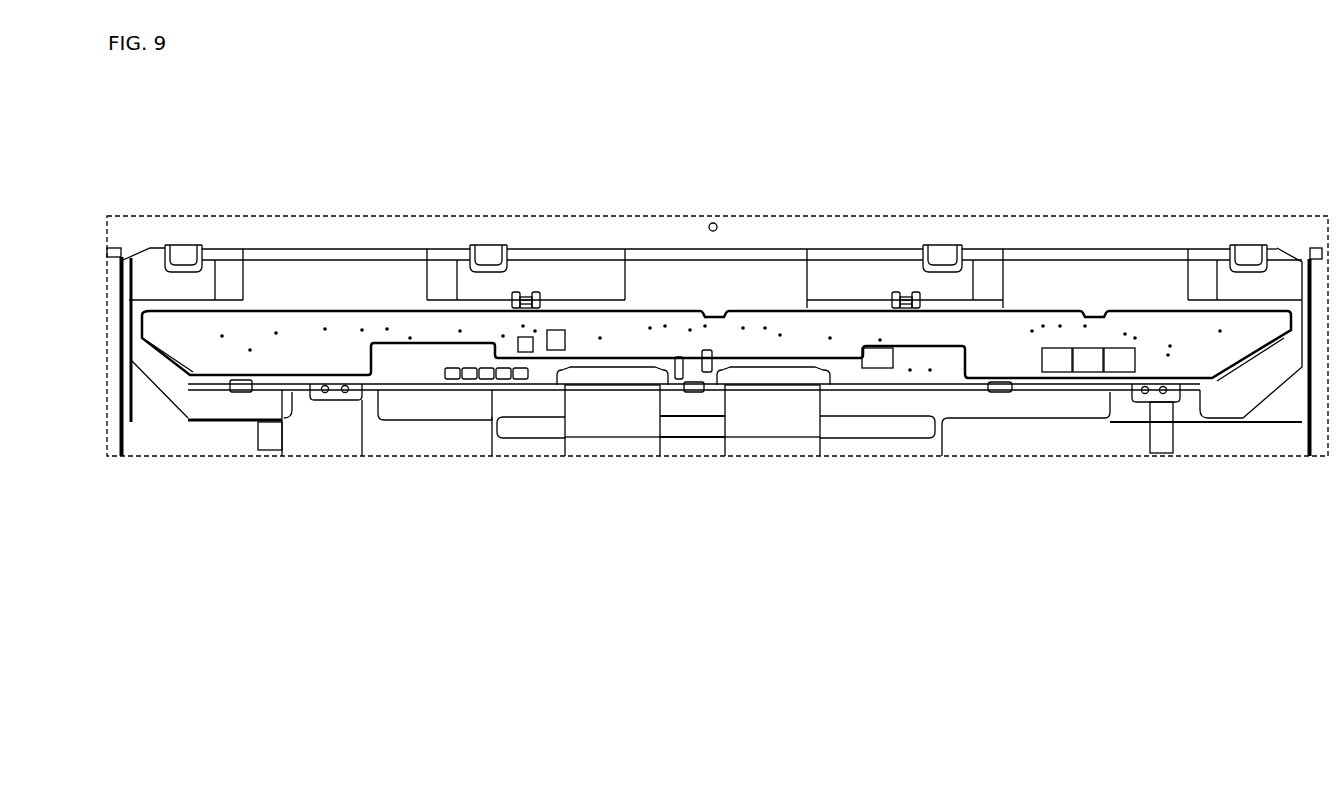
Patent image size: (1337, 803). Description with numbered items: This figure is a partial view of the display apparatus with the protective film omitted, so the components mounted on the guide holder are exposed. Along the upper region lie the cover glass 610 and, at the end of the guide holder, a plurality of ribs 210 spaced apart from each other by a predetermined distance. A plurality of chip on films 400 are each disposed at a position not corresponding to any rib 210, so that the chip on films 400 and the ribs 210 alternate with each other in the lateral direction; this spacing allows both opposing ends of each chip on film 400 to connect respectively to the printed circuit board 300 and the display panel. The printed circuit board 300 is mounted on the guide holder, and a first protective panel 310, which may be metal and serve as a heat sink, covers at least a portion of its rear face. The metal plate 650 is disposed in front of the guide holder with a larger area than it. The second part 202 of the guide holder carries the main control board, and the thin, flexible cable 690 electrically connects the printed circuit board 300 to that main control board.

The second part 202 is at (871, 443).
The rib 210 is at (184, 245).
The printed circuit board 300 is at (415, 363).
The first protective panel 310 is at (340, 352).
The chip on film 400 is at (363, 277).
The cover glass 610 is at (272, 232).
The metal plate 650 is at (465, 440).
The cable 690 is at (615, 418).